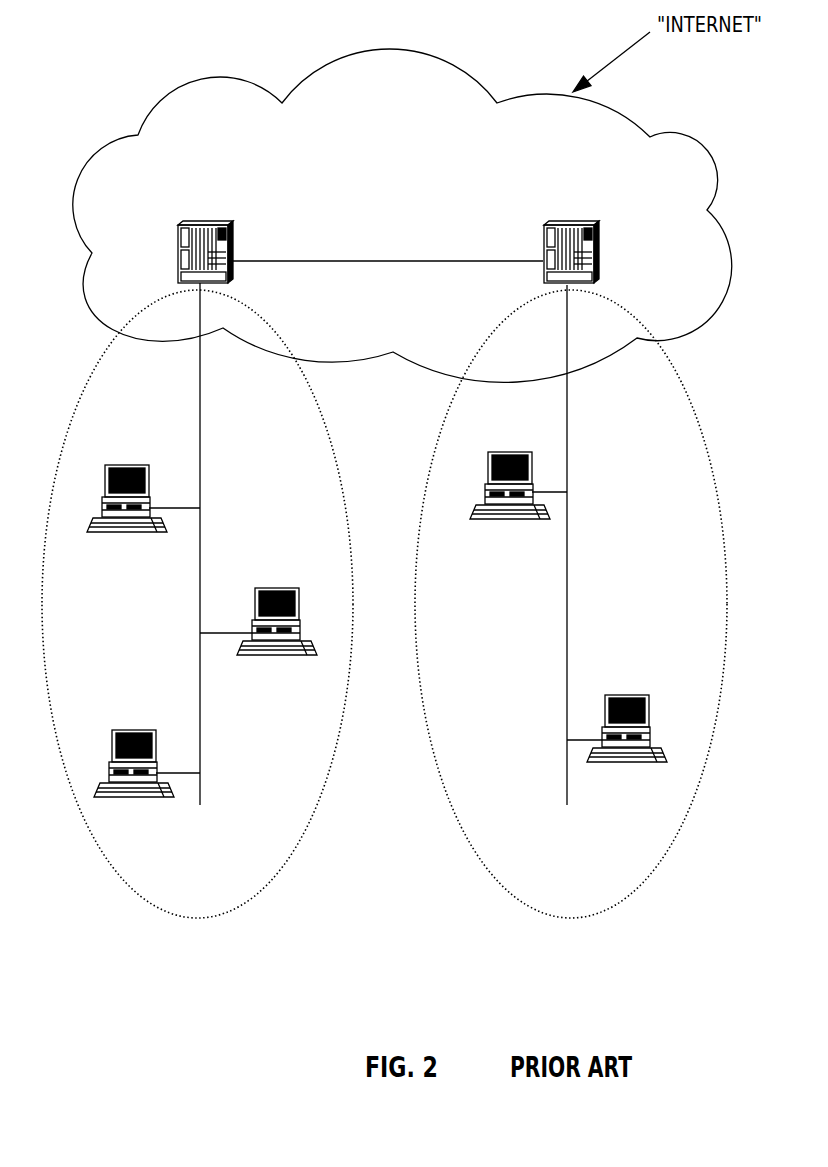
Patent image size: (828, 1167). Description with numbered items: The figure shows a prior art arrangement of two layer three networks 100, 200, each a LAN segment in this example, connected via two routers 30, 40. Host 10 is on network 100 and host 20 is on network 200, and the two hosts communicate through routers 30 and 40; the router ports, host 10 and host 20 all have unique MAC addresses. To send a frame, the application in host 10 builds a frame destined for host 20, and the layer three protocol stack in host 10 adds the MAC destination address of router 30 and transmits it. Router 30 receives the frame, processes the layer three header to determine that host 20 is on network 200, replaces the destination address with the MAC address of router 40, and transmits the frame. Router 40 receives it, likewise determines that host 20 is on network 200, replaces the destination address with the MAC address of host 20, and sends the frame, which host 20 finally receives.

The host 10 is at (110, 747).
The host 20 is at (647, 727).
The router 30 is at (178, 261).
The router 40 is at (598, 256).
The layer 3 network 100 is at (125, 878).
The layer 3 network 200 is at (658, 855).